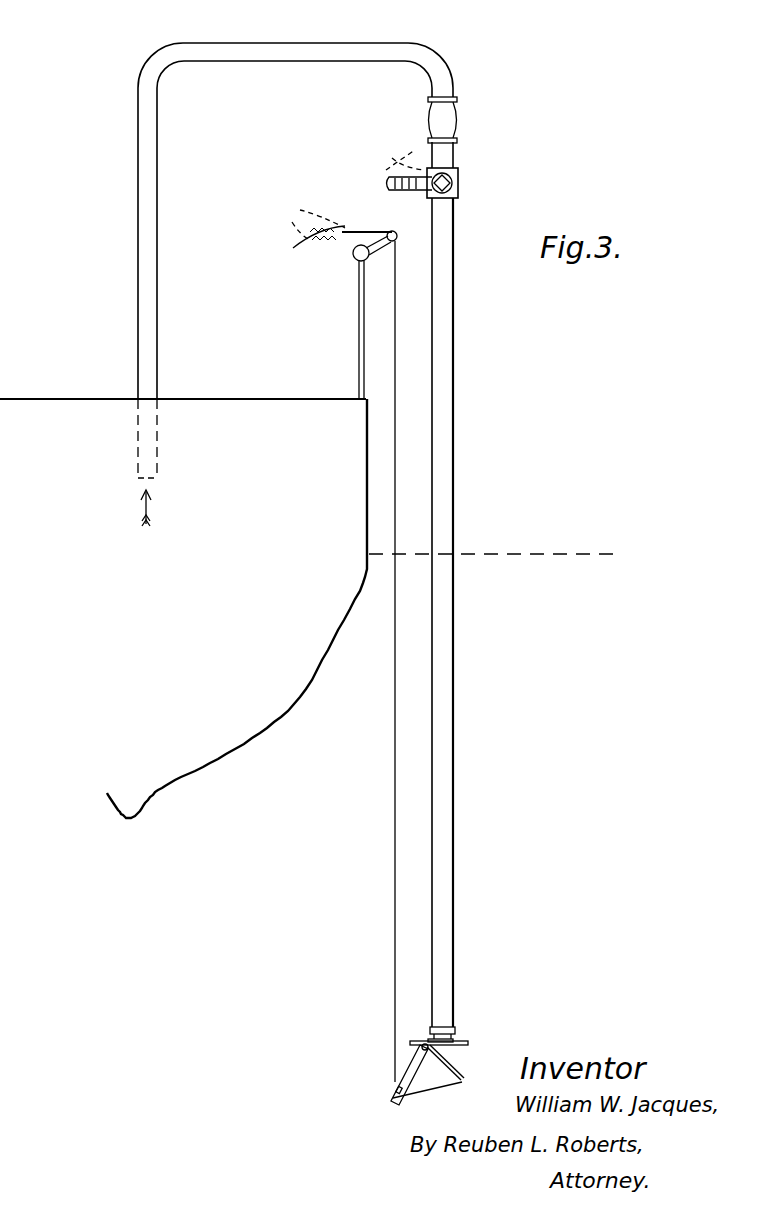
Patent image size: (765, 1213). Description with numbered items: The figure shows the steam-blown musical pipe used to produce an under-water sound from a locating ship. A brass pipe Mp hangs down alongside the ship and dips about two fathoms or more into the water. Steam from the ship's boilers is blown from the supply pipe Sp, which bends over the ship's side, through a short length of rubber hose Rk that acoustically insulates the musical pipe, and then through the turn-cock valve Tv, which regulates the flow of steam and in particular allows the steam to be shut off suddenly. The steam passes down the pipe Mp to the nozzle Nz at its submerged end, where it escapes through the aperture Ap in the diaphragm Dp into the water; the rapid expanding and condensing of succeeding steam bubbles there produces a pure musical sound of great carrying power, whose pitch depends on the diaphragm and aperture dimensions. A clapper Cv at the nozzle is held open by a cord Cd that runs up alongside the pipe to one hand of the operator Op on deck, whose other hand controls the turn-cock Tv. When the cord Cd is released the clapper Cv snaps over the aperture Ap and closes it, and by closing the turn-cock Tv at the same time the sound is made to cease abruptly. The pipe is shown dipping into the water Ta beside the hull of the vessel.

The supply pipe Sp is at (213, 50).
The operator Op is at (388, 158).
The rubber connection / coupling Rk is at (456, 118).
The turn-cock valve Tv is at (460, 182).
The tank Ta is at (166, 572).
The brass pipe Mp is at (447, 632).
The cord Cd is at (395, 840).
The nozzle Nz is at (526, 997).
The diaphragm Dp is at (566, 1050).
The aperture Ap is at (512, 1077).
The clapper Cv is at (438, 1060).